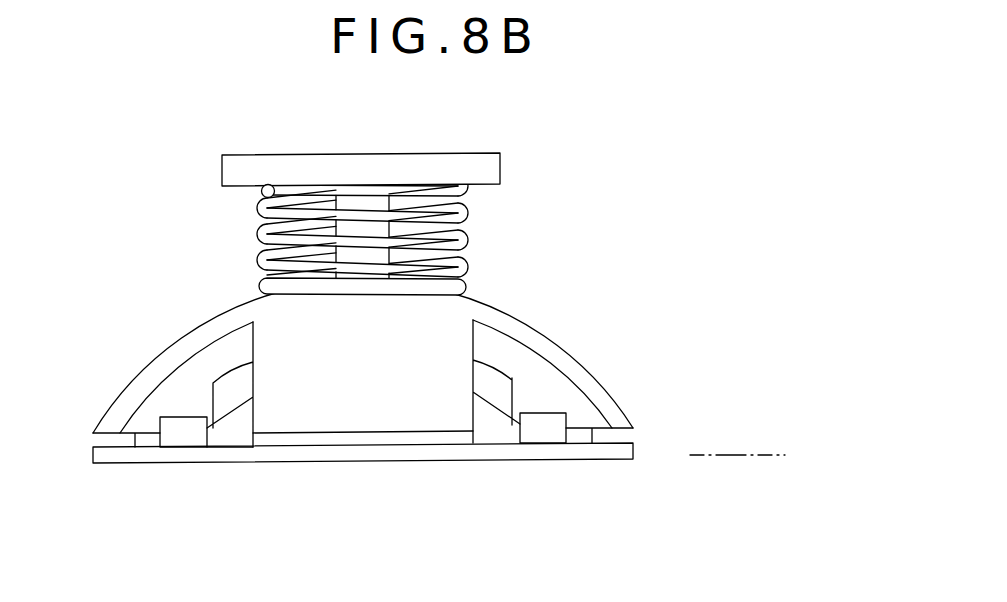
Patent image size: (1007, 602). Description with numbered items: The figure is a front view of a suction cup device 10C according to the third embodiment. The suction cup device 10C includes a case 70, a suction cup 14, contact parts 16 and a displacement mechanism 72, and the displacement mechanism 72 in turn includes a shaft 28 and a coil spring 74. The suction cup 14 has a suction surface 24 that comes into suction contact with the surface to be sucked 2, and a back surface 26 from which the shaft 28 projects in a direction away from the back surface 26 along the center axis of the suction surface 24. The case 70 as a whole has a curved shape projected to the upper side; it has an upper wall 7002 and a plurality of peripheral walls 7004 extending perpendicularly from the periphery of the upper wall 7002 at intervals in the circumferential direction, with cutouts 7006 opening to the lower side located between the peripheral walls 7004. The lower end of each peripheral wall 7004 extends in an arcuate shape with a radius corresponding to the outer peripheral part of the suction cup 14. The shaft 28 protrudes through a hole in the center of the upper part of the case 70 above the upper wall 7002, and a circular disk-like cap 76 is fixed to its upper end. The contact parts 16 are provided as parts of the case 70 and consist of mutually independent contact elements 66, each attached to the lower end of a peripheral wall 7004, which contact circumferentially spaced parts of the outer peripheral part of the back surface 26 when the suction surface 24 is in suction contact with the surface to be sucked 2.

The suction cup device 10C is at (580, 153).
The cap 76 is at (400, 154).
The shaft 28 is at (362, 213).
The coil spring 74 is at (258, 207).
The displacement mechanism 72 is at (507, 243).
The case 70 is at (503, 311).
The upper wall 7002 is at (343, 296).
The peripheral walls 7004 is at (163, 357).
The cutouts 7006 is at (525, 365).
The contact elements 66 is at (183, 438).
The back surface 26 is at (222, 437).
The suction surface 24 is at (289, 464).
The suction cup 14 is at (485, 462).
The contact parts 16 is at (549, 437).
The surface to be sucked 2 is at (736, 455).